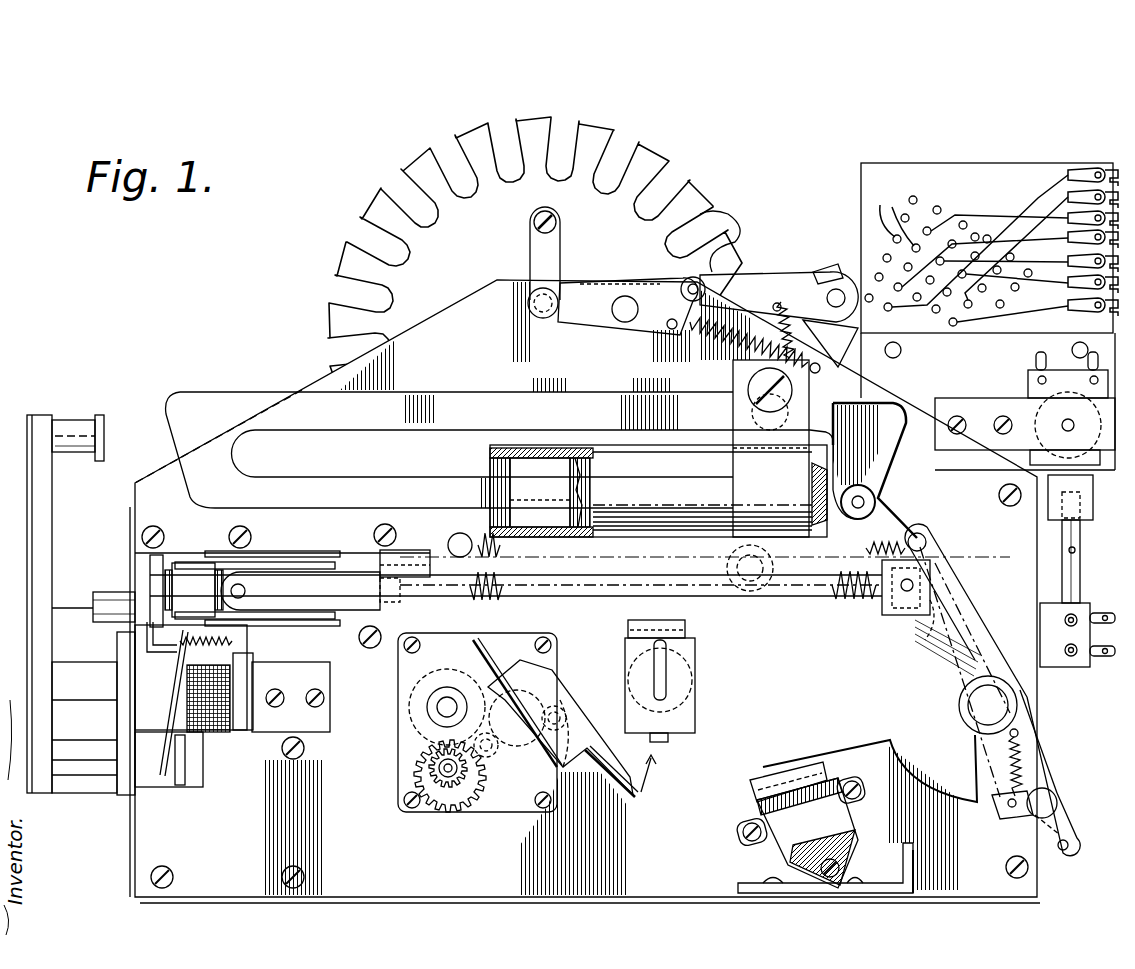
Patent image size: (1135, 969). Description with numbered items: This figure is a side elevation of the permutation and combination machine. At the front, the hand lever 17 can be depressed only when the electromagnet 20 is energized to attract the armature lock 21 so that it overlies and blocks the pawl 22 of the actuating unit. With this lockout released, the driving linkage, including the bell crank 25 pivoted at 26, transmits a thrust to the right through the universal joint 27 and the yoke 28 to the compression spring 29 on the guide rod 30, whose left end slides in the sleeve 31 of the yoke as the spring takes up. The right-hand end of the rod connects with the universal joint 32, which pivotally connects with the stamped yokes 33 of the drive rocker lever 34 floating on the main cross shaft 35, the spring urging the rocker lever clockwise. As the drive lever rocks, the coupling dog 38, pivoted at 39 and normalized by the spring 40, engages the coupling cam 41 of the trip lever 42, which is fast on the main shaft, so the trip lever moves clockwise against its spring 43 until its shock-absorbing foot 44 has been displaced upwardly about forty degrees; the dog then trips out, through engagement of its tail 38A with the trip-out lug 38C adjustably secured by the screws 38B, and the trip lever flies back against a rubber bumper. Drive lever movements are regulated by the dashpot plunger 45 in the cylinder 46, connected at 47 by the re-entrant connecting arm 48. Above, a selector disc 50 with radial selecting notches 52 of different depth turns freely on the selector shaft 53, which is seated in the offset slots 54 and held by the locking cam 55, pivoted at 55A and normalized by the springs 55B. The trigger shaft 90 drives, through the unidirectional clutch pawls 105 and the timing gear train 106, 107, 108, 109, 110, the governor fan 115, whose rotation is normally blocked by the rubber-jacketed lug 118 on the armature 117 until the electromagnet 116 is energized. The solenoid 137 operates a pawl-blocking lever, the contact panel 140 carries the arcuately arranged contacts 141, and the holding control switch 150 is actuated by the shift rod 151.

The hand lever 17 is at (50, 497).
The electromagnet 20 is at (216, 733).
The armature lock 21 is at (163, 786).
The pawl 22 is at (188, 784).
The bell crank 25 is at (188, 562).
The bell crank pivot 26 is at (312, 560).
The universal joint 27 is at (194, 590).
The yoke 28 is at (310, 591).
The compression spring 29 is at (490, 600).
The guide rod 30 is at (556, 597).
The sleeve 31 is at (405, 563).
The universal joint 32 is at (897, 614).
The stamped yokes 33 is at (912, 640).
The drive rocker lever 34 is at (925, 530).
The main cross shaft 35 is at (990, 698).
The coupling dog 38 is at (1013, 818).
The tail of coupling dog 38A is at (1064, 855).
The screws 38B is at (843, 887).
The trip-out lug 38C is at (917, 866).
The coupling dog pivot 39 is at (1058, 803).
The spring 40 is at (1022, 762).
The coupling cam 41 is at (966, 806).
The trip lever 42 is at (934, 727).
The spring 43 is at (800, 546).
The shock-absorbing foot 44 is at (770, 772).
The dashpot plunger 45 is at (544, 488).
The cylinder 46 is at (664, 488).
The connection 47 is at (875, 500).
The re-entrant connecting arm 48 is at (600, 420).
The selector disc 50 is at (494, 250).
The selecting notches 52 is at (566, 158).
The selector shaft 53 is at (532, 310).
The offset slots 54 is at (568, 290).
The locking cam 55 is at (597, 316).
The locking cam pivot 55A is at (627, 323).
The normalizing springs 55B is at (751, 340).
The trigger shaft 90 is at (445, 707).
The unidirectional clutch pawls 105 is at (415, 776).
The timing gear 106 is at (447, 669).
The timing gear 107 is at (446, 790).
The timing gear 108 is at (505, 768).
The timing gear 109 is at (514, 744).
The timing gear 110 is at (568, 722).
The governor fan 115 is at (645, 765).
The electromagnet 116 is at (698, 682).
The armature 117 is at (670, 740).
The rubber-jacketed lug 118 is at (671, 771).
The electromagnetic solenoid 137 is at (1028, 392).
The contact panel 140 is at (1016, 184).
The contacts 141 is at (893, 214).
The holding control switch 150 is at (1082, 572).
The shift rod 151 is at (1093, 497).